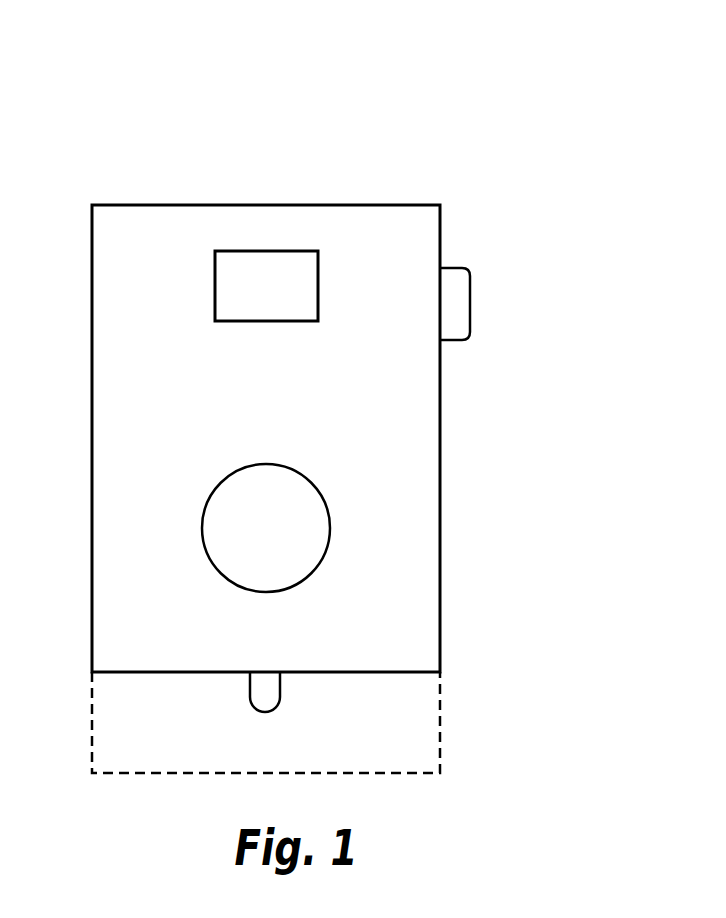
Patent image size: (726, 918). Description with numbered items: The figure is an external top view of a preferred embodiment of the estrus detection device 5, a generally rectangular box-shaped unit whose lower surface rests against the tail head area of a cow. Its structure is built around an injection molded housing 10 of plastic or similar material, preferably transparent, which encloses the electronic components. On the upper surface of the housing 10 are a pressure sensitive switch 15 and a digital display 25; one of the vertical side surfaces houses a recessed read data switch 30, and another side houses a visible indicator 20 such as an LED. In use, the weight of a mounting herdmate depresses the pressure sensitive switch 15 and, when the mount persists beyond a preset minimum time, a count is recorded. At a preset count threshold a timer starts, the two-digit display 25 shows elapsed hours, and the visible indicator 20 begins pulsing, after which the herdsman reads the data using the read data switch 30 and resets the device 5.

The detection device 5 is at (475, 200).
The housing 10 is at (178, 205).
The pressure sensitive switch 15 is at (202, 538).
The visible indicator 20 is at (281, 686).
The digital display 25 is at (320, 277).
The read data switch 30 is at (465, 308).